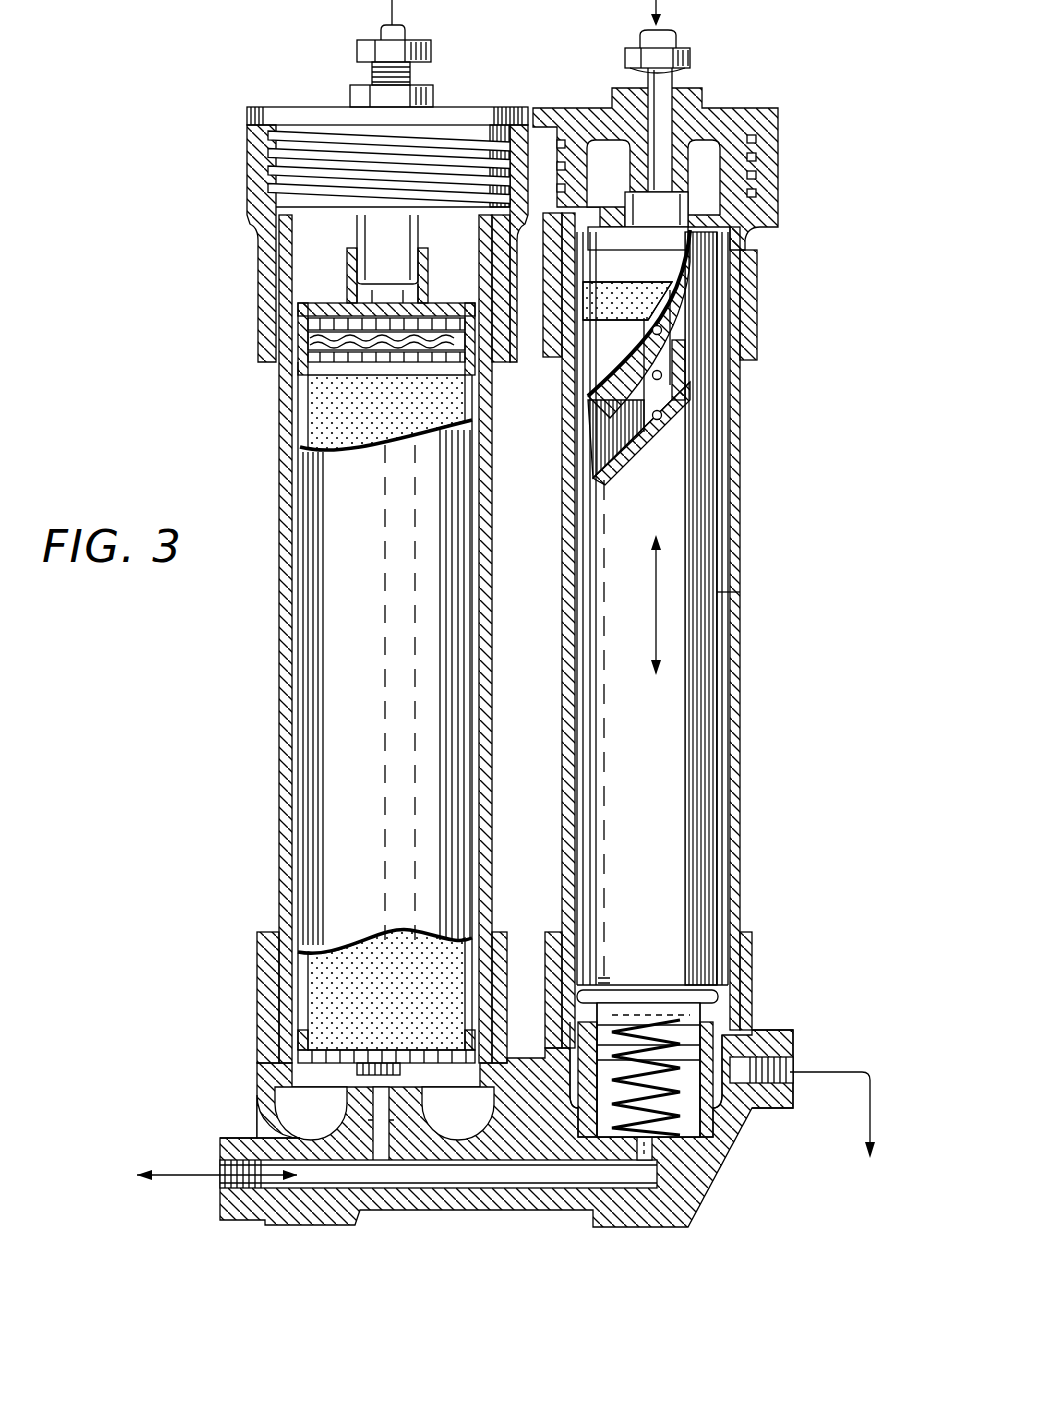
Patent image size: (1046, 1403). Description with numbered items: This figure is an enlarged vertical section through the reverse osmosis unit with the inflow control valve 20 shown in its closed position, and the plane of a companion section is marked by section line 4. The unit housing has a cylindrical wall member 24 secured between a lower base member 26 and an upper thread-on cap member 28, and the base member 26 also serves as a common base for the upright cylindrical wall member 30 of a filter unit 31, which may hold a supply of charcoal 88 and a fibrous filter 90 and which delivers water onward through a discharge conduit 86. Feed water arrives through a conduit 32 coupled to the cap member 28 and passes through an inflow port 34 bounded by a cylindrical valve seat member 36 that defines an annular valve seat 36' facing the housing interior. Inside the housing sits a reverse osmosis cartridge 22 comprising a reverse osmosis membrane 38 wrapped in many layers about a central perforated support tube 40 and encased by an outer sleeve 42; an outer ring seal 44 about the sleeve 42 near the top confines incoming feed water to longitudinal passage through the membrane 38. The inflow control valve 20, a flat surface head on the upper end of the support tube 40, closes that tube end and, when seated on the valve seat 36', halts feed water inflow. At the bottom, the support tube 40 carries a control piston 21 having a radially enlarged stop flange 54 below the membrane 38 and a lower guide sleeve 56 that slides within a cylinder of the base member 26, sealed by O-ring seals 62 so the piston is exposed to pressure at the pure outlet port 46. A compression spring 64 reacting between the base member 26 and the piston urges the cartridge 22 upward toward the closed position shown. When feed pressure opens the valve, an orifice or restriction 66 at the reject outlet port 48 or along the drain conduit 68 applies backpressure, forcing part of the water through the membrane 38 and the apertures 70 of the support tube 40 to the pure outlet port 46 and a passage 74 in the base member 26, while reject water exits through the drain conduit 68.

The section line 4- 4 is at (650, 795).
The inflow control valve 20 is at (665, 212).
The control piston 21 is at (665, 980).
The reverse osmosis cartridge 22 is at (688, 526).
The cylindrical wall member 24 is at (740, 670).
The base member 26 is at (700, 1184).
The cap member 28 is at (738, 106).
The cylindrical wall member 30 is at (279, 715).
The filter unit 31 is at (355, 594).
The conduit 32 is at (662, 48).
The inflow port 34 is at (655, 110).
The valve seat member 36 is at (791, 166).
The valve seat 36' is at (702, 171).
The reverse osmosis membrane 38 is at (700, 345).
The perforated support tube 40 is at (690, 362).
The outer sleeve 42 is at (740, 592).
The outer ring seal 44 is at (725, 298).
The pure outlet port 46 is at (592, 1212).
The reject outlet port 48 is at (793, 1065).
The stop flange 54 is at (645, 995).
The lower guide sleeve 56 is at (612, 1004).
The O-ring seals 62 is at (600, 1062).
The compression spring 64 is at (705, 1120).
The orifice or restriction 66 is at (835, 1065).
The drain conduit 68 is at (828, 1085).
The apertures 70 is at (650, 410).
The passage 74 is at (490, 1215).
The discharge conduit 86 is at (415, 28).
The charcoal 88 is at (320, 990).
The fibrous filter 90 is at (308, 342).